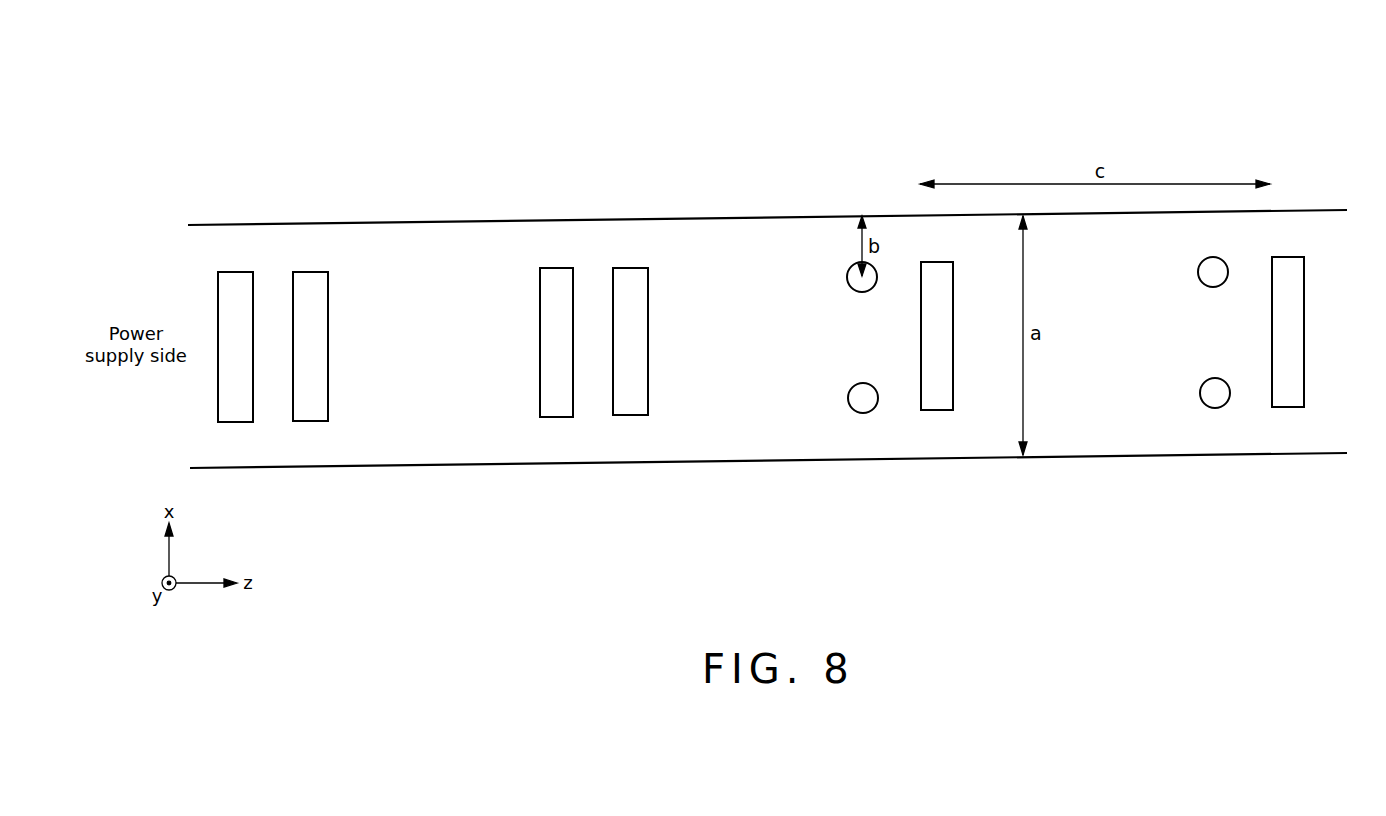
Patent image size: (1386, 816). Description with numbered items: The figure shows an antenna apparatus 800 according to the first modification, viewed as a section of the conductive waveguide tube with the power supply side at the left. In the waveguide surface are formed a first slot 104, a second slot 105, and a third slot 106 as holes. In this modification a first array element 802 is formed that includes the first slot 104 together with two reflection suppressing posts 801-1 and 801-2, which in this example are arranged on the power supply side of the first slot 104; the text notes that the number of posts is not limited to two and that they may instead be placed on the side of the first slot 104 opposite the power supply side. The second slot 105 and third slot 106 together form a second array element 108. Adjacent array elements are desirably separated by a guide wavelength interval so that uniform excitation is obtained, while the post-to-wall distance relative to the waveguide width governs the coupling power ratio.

The antenna apparatus 800 is at (930, 108).
The first slot 104 is at (1292, 407).
The second slot 105 is at (626, 415).
The third slot 106 is at (555, 417).
The second array element 108 is at (533, 503).
The reflection suppressing post 801-1 is at (1198, 276).
The reflection suppressing post 801-2 is at (1213, 408).
The first array element 802 is at (1132, 492).